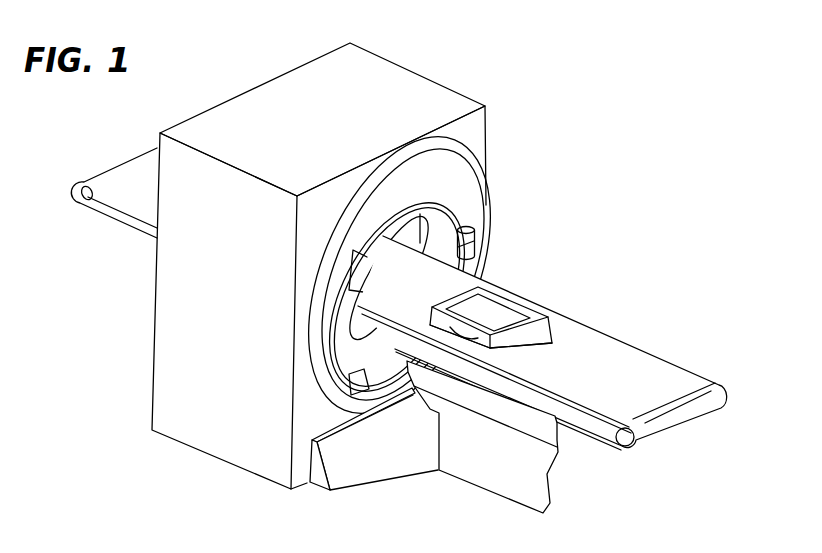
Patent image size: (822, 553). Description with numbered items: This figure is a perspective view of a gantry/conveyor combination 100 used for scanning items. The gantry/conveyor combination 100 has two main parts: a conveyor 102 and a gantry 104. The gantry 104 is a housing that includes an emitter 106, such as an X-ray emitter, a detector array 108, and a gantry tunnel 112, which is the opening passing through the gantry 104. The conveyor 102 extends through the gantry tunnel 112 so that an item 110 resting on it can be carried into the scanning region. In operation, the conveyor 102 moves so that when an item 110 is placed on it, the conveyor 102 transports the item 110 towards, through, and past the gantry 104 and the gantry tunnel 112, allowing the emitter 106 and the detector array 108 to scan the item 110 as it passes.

The gantry/conveyor combination 100 is at (425, 279).
The conveyor 102 is at (526, 404).
The gantry 104 is at (461, 183).
The emitter 106 is at (476, 240).
The detector array 108 is at (343, 332).
The item 110 is at (497, 313).
The gantry tunnel 112 is at (431, 208).